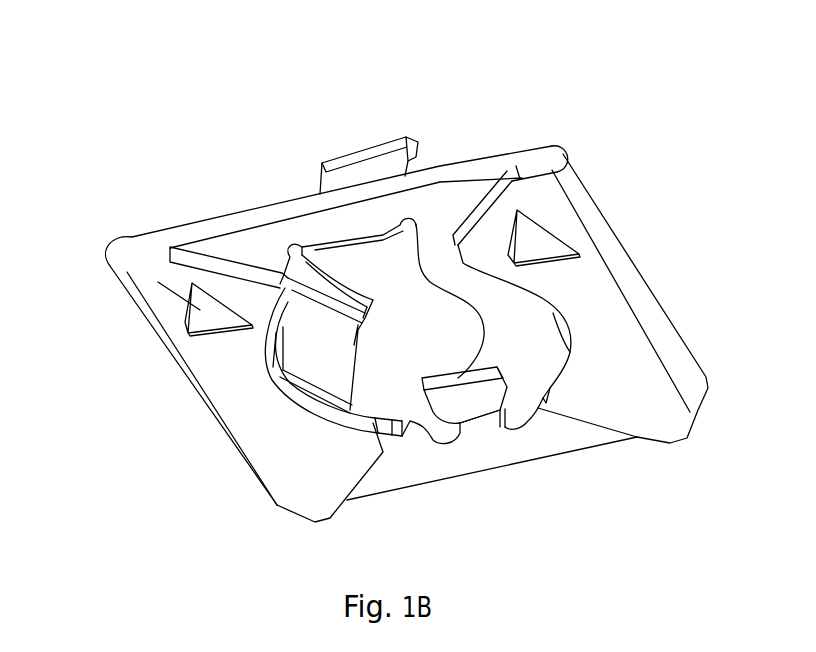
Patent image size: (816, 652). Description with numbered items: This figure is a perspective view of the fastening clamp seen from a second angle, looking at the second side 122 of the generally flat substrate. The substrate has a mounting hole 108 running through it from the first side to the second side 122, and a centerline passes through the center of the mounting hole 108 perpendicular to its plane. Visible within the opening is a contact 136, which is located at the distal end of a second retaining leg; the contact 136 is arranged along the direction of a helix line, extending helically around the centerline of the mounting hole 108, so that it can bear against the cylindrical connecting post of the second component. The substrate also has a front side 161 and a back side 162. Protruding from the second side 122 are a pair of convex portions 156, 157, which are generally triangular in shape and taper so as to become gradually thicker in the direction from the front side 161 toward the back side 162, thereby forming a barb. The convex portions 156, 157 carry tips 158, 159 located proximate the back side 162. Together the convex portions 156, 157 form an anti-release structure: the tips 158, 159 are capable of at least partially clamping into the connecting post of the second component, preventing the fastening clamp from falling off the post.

The mounting hole 108 is at (530, 352).
The second side 122 is at (592, 293).
The contact 136 is at (417, 225).
The convex portion 156 is at (537, 250).
The convex portion 157 is at (125, 300).
The tip 158 is at (516, 212).
The tip 159 is at (195, 275).
The front side 161 is at (448, 480).
The back side 162 is at (280, 218).